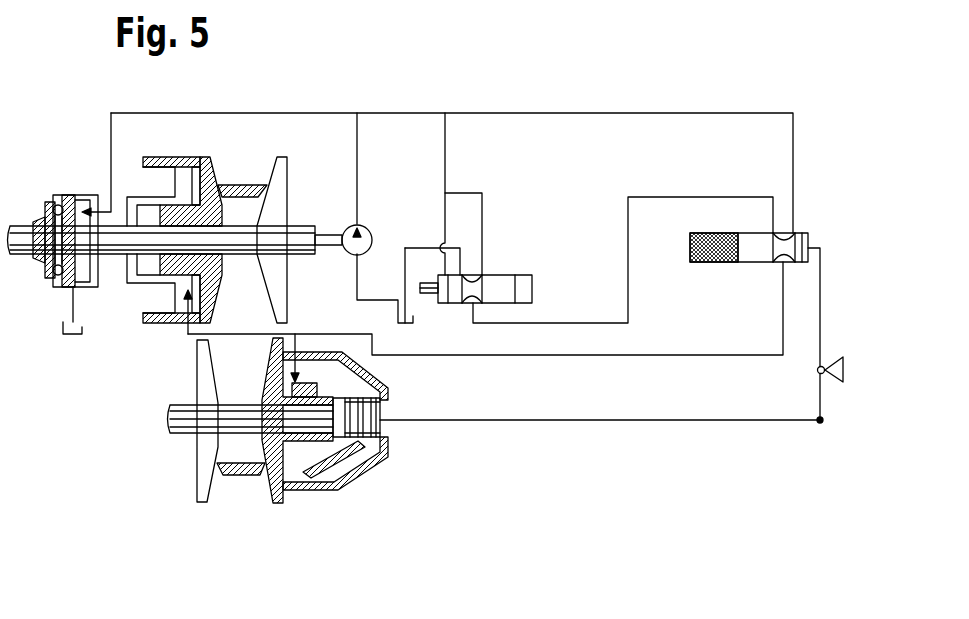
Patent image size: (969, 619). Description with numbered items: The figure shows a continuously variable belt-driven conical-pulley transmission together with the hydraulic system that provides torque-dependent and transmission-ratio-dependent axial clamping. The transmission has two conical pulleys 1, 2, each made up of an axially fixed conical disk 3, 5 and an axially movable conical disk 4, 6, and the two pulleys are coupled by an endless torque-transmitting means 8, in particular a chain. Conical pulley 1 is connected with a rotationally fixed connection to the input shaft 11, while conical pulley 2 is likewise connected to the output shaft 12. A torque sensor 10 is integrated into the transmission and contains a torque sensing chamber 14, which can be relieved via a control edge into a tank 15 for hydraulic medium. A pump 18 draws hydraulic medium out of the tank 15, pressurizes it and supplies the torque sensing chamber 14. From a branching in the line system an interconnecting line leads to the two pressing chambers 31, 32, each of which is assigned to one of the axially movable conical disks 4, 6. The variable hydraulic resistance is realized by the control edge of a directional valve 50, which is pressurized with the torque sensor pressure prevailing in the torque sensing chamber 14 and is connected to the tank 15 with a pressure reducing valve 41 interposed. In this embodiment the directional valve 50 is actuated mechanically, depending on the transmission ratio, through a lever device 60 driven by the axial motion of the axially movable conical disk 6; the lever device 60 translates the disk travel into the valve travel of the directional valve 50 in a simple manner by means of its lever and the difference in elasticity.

The conical pulley 1 is at (235, 226).
The conical pulley 2 is at (252, 448).
The axially fixed conical disk 3 is at (282, 181).
The axially movable conical disk 4 is at (208, 160).
The axially fixed conical disk 5 is at (205, 457).
The axially movable conical disk 6 is at (268, 482).
The endless torque-transmitting means 8 is at (238, 478).
The torque sensor 10 is at (70, 172).
The input shaft 11 is at (26, 250).
The output shaft 12 is at (172, 418).
The torque sensing chamber 14 is at (82, 270).
The tank 15 is at (72, 338).
The pump 18 is at (350, 247).
The pressing chamber 31 is at (192, 283).
The pressing chamber 32 is at (292, 388).
The pressure reducing valve 41 is at (521, 263).
The directional valve 50 is at (830, 228).
The lever device 60 is at (755, 432).